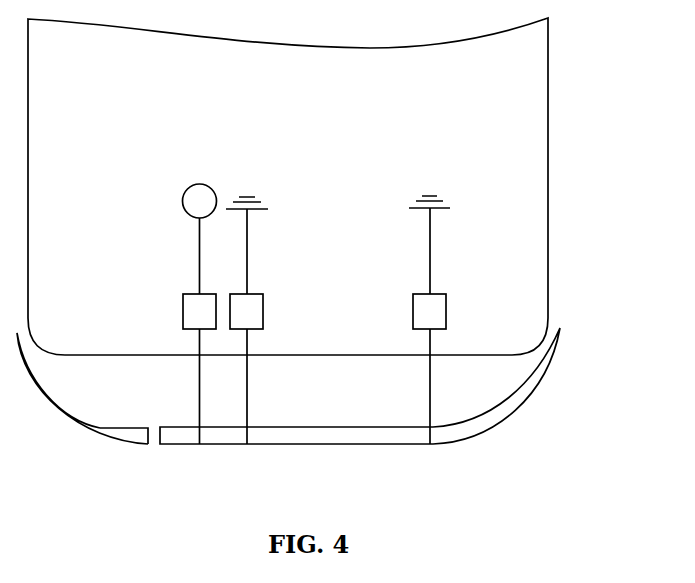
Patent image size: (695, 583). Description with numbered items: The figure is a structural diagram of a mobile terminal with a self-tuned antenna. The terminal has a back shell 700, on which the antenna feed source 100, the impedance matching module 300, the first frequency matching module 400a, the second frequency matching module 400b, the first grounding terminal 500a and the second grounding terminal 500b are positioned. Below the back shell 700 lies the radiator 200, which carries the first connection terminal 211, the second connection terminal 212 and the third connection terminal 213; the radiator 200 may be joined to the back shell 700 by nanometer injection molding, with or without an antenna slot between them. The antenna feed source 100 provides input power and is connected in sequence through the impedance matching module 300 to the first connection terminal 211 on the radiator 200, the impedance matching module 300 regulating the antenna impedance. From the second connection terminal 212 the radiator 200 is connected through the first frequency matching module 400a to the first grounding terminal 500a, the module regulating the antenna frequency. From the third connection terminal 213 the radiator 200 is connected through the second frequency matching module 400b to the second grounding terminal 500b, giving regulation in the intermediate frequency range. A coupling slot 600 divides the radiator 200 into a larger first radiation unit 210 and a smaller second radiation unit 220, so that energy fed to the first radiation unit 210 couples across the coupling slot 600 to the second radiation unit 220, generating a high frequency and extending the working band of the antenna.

The back shell 700 is at (314, 45).
The antenna feed source 100 is at (200, 184).
The radiator 200 is at (490, 428).
The first radiation unit 210 is at (328, 437).
The first connection terminal 211 is at (200, 428).
The second connection terminal 212 is at (432, 441).
The third connection terminal 213 is at (247, 428).
The second radiation unit 220 is at (86, 424).
The impedance matching module 300 is at (194, 294).
The first frequency matching module 400a is at (441, 294).
The second frequency matching module 400b is at (261, 294).
The first grounding terminal 500a is at (430, 195).
The second grounding terminal 500b is at (249, 196).
The coupling slot 600 is at (154, 428).